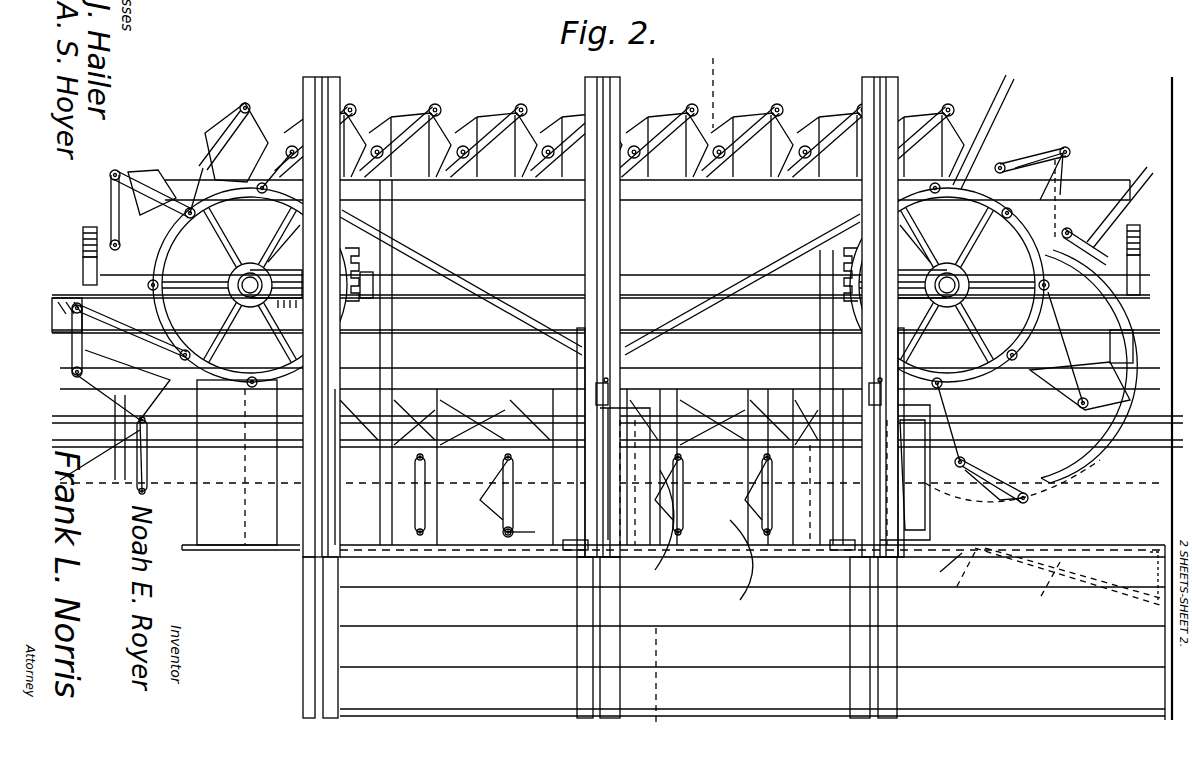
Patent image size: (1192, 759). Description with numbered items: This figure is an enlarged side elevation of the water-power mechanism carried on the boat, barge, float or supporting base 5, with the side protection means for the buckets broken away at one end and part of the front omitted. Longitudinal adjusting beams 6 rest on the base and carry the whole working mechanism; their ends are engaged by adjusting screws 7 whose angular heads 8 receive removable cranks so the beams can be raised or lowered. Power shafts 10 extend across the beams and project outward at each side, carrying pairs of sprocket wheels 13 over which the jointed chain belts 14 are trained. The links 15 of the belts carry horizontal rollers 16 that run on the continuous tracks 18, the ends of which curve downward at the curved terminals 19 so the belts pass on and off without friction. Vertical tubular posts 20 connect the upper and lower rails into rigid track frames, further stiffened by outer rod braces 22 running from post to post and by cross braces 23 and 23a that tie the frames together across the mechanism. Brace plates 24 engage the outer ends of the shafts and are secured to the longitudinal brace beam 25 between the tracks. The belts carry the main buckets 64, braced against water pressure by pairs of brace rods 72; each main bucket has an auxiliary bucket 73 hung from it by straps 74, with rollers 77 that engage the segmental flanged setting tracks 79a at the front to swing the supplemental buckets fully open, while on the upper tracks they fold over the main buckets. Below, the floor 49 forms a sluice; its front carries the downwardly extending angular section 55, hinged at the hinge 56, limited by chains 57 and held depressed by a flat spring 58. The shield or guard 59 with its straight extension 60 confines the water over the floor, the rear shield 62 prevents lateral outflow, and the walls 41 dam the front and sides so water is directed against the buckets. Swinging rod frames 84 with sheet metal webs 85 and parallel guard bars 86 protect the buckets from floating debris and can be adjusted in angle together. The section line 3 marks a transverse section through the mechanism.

The section line 3 is at (691, 377).
The boat, barge, float or supporting base 5 is at (497, 350).
The adjusting beam 6 is at (56, 308).
The adjusting screw 7 is at (82, 265).
The angular head 8 is at (82, 228).
The power shaft 10 is at (262, 285).
The sprocket wheel 13 is at (327, 245).
The chain belt 14 is at (165, 348).
The jointed link 15 is at (160, 256).
The horizontal roller 16 is at (722, 158).
The track 18 is at (517, 193).
The curved terminal of track 19 is at (278, 215).
The vertical tubular post 20 is at (333, 78).
The outer rod brace 22 is at (460, 284).
The cross brace or tie device 23 is at (405, 262).
The rack 23a is at (848, 272).
The brace plate 24 is at (290, 272).
The longitudinal brace beam 25 is at (650, 276).
The wall 41 is at (752, 632).
The floor 49 is at (938, 571).
The downwardly extending angular section 55 is at (1035, 589).
The hinge 56 is at (961, 584).
The chain 57 is at (1150, 570).
The flat spring 58 is at (1018, 552).
The shield or guard 59 is at (1088, 490).
The straight extension 60 is at (925, 495).
The shield 62 is at (221, 548).
The main bucket 64 is at (492, 428).
The brace rod 72 is at (470, 159).
The auxiliary bucket 73 is at (502, 500).
The strap 74 is at (503, 525).
The roller 77 is at (514, 533).
The segmental flanged setting track 79a is at (1136, 332).
The swinging rod frame 84 is at (668, 560).
The sheet metal web 85 is at (612, 525).
The guard bar 86 is at (728, 435).